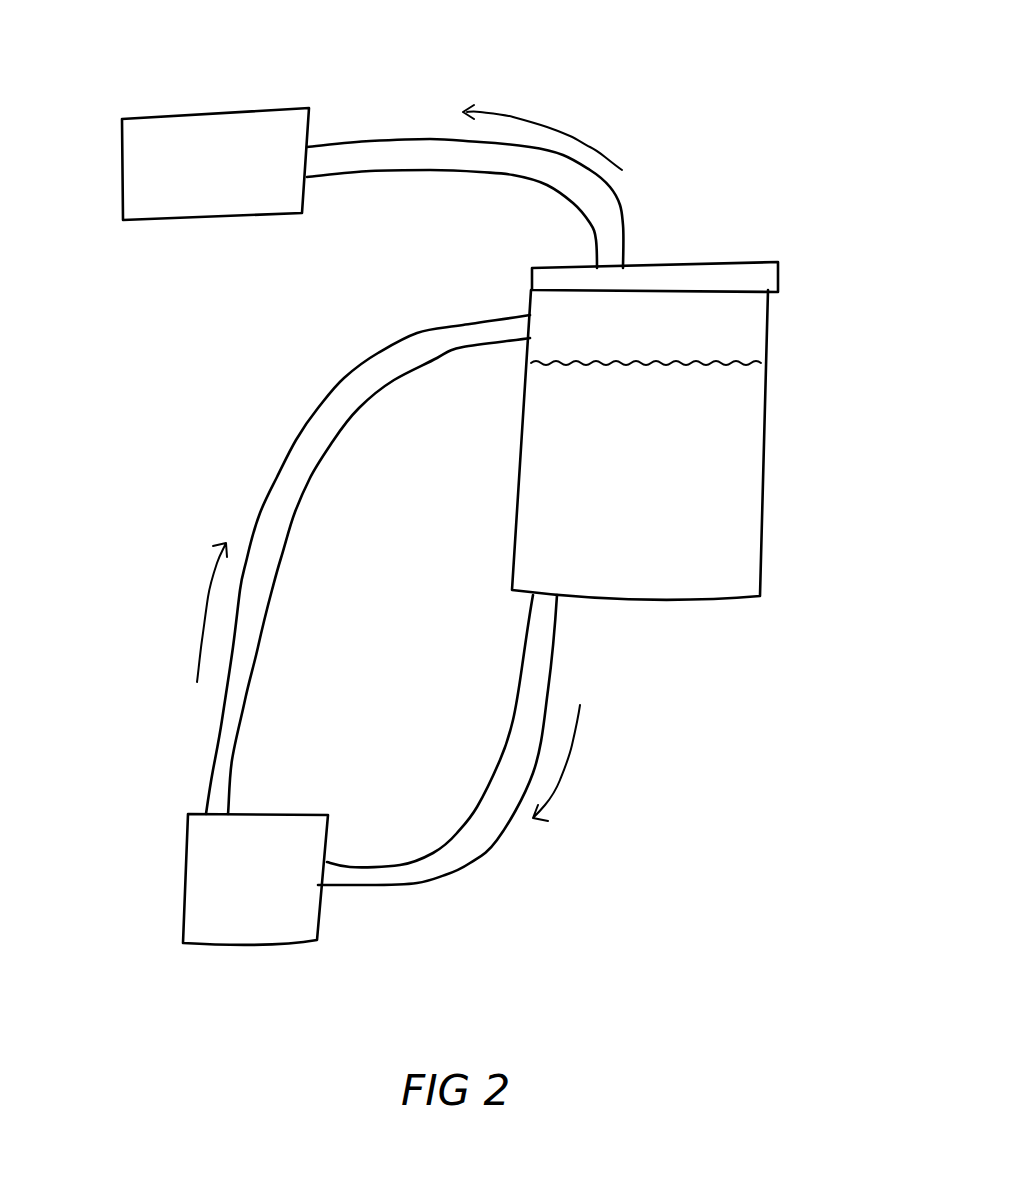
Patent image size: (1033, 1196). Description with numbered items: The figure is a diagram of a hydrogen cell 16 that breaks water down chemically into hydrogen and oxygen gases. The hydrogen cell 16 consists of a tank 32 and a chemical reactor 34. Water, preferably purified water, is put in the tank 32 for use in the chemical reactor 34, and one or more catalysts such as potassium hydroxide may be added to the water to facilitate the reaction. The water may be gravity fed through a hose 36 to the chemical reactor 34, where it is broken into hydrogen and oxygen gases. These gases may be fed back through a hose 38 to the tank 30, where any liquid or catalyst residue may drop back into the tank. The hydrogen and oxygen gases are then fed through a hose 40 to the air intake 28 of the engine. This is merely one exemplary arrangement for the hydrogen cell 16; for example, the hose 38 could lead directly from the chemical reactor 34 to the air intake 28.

The hydrogen cell 16 is at (731, 128).
The air intake 28 is at (157, 143).
The tank 30 is at (755, 327).
The tank 32 is at (737, 470).
The chemical reactor 34 is at (208, 893).
The hose 36 is at (450, 865).
The hose 38 is at (285, 497).
The hose 40 is at (399, 148).